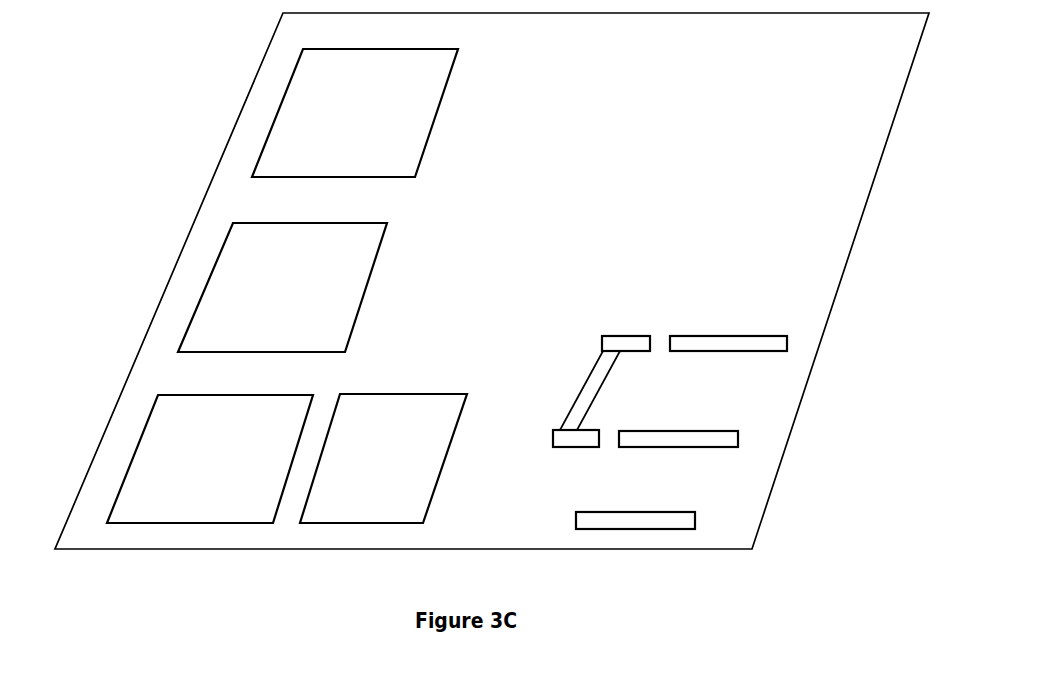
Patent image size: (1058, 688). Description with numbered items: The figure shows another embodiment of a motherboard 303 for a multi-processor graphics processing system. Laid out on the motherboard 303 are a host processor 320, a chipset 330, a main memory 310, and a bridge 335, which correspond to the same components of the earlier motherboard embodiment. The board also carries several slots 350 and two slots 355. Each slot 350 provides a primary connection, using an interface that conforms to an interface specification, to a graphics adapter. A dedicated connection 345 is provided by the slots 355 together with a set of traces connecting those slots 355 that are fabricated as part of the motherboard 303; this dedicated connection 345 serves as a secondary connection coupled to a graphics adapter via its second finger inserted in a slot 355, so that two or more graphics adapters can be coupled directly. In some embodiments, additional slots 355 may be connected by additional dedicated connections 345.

The motherboard 303 is at (847, 88).
The host processor 320 is at (382, 146).
The chipset 330 is at (302, 314).
The main memory 310 is at (232, 498).
The bridge 335 is at (408, 484).
The dedicated connection 345 is at (595, 383).
The slot 355 is at (627, 335).
The slot 350 is at (788, 341).